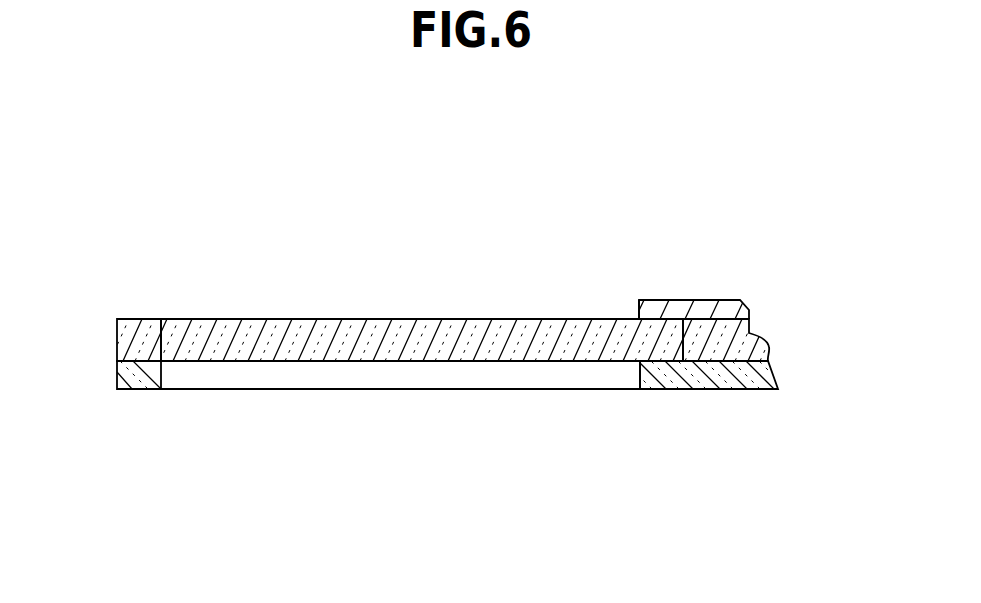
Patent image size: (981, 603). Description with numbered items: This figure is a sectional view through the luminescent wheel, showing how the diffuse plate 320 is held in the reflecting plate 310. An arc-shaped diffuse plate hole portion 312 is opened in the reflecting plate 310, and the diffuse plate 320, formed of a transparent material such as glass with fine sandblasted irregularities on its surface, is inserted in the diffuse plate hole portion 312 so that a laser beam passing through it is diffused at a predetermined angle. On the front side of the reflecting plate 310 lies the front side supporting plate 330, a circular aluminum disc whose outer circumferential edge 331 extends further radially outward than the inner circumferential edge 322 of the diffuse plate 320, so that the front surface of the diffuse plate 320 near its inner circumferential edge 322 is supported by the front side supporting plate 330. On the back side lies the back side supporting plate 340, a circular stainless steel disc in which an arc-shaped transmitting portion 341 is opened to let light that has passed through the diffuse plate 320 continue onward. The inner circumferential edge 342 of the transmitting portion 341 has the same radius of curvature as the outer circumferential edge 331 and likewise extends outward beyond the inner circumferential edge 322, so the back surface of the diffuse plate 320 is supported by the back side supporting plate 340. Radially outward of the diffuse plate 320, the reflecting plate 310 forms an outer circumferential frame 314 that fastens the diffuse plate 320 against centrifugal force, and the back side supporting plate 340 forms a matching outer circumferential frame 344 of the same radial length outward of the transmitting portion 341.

The reflecting plate 310 is at (723, 338).
The diffuse plate hole portion 312 is at (422, 300).
The outer circumferential frame 314 is at (135, 333).
The diffuse plate 320 is at (270, 345).
The inner circumferential edge 322 is at (692, 348).
The front side supporting plate 330 is at (688, 300).
The outer circumferential edge 331 is at (638, 308).
The back side supporting plate 340 is at (728, 373).
The transmitting portion 341 is at (258, 373).
The inner circumferential edge 342 is at (638, 373).
The outer circumferential frame 344 is at (143, 373).